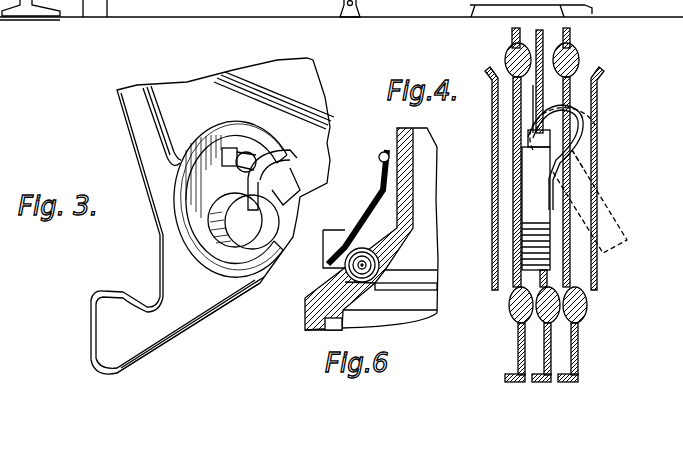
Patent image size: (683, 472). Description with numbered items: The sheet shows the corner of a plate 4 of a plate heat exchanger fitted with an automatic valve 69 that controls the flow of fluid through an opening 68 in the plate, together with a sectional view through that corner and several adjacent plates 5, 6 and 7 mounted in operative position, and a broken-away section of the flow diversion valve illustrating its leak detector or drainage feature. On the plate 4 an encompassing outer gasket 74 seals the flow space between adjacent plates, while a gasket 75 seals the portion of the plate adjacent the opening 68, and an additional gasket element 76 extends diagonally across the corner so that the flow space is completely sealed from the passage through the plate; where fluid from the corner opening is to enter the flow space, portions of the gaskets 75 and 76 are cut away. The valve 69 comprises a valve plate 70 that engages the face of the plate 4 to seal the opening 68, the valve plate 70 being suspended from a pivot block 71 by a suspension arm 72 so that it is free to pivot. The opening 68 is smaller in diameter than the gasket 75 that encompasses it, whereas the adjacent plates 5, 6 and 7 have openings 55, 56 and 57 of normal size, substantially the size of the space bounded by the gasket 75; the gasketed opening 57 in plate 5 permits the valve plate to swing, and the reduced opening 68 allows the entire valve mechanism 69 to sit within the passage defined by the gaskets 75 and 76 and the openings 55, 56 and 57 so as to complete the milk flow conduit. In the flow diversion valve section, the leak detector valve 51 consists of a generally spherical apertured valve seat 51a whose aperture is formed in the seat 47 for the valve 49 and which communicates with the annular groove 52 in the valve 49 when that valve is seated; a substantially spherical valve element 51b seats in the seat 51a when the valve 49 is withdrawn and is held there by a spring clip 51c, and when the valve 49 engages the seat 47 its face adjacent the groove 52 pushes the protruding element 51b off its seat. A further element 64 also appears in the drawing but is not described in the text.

In FIG. 4, the plate 4 is at (512, 33).
In FIG. 4, the adjacent plate 5 is at (537, 32).
In FIG. 4, the adjacent plate 6 is at (578, 42).
In FIG. 4, the adjacent plate 7 is at (597, 80).
In FIG. 6, the valve seat 47 is at (385, 252).
In FIG. 6, the valve 49 is at (407, 320).
In FIG. 6, the leak detector valve 51 is at (346, 224).
In FIG. 6, the apertured valve seat 51a is at (345, 282).
In FIG. 6, the spherical valve element 51b is at (327, 268).
In FIG. 6, the spring clip 51c is at (383, 190).
In FIG. 6, the annular groove 52 is at (473, 283).
In FIG. 4, the gasketed opening 55 is at (597, 272).
In FIG. 4, the opening 56 is at (570, 267).
In FIG. 4, the gasketed opening 57 is at (560, 92).
In FIG. 4, the guide rod 64 is at (493, 172).
In FIG. 3, the opening 68 is at (210, 237).
In FIG. 4, the opening 68 is at (522, 250).
In FIG. 3, the valve 69 is at (255, 200).
In FIG. 4, the valve 69 is at (557, 227).
In FIG. 3, the valve plate 70 is at (240, 257).
In FIG. 4, the valve plate 70 is at (538, 222).
In FIG. 3, the pivot block 71 is at (227, 165).
In FIG. 4, the pivot block 71 is at (522, 137).
In FIG. 3, the suspension arm 72 is at (270, 163).
In FIG. 4, the suspension arm 72 is at (590, 115).
In FIG. 3, the outer gasket 74 is at (147, 110).
In FIG. 3, the gasket 75 is at (230, 123).
In FIG. 4, the gasket 75 is at (507, 53).
In FIG. 3, the additional gasket element 76 is at (297, 98).